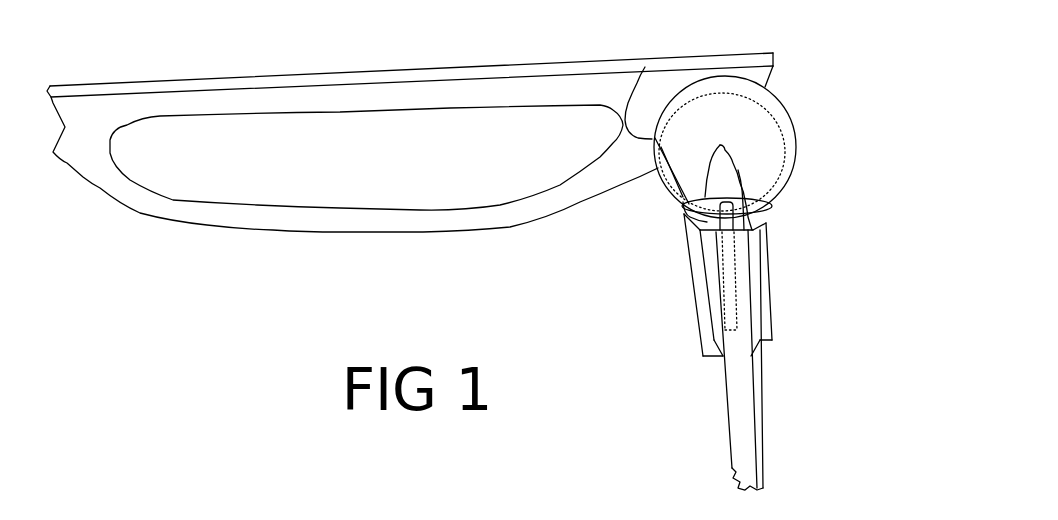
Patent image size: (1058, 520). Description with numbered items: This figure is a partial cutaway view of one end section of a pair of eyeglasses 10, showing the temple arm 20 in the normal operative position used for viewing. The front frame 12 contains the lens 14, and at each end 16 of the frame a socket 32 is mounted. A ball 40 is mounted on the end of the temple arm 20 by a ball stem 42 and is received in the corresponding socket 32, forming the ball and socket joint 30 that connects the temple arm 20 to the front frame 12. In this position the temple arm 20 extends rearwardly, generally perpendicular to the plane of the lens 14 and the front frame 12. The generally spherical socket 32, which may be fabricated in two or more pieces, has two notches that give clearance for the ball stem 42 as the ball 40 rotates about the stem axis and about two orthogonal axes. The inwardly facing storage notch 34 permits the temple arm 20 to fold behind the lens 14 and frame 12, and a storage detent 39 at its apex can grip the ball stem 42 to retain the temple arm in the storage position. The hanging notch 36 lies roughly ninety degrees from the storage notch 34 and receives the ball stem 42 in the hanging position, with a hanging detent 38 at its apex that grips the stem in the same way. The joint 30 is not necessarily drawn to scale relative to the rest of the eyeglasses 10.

The eyeglasses 10 is at (232, 253).
The front frame 12 is at (107, 183).
The lens 14 is at (423, 180).
The end 16 is at (777, 73).
The temple arm 20 is at (738, 355).
The ball and socket joint 30 is at (683, 190).
The socket 32 is at (752, 172).
The storage notch 34 is at (662, 168).
The hanging notch 36 is at (750, 225).
The hanging detent 38 is at (727, 153).
The storage detent 39 is at (645, 67).
The ball 40 is at (767, 165).
The ball stem 42 is at (719, 222).